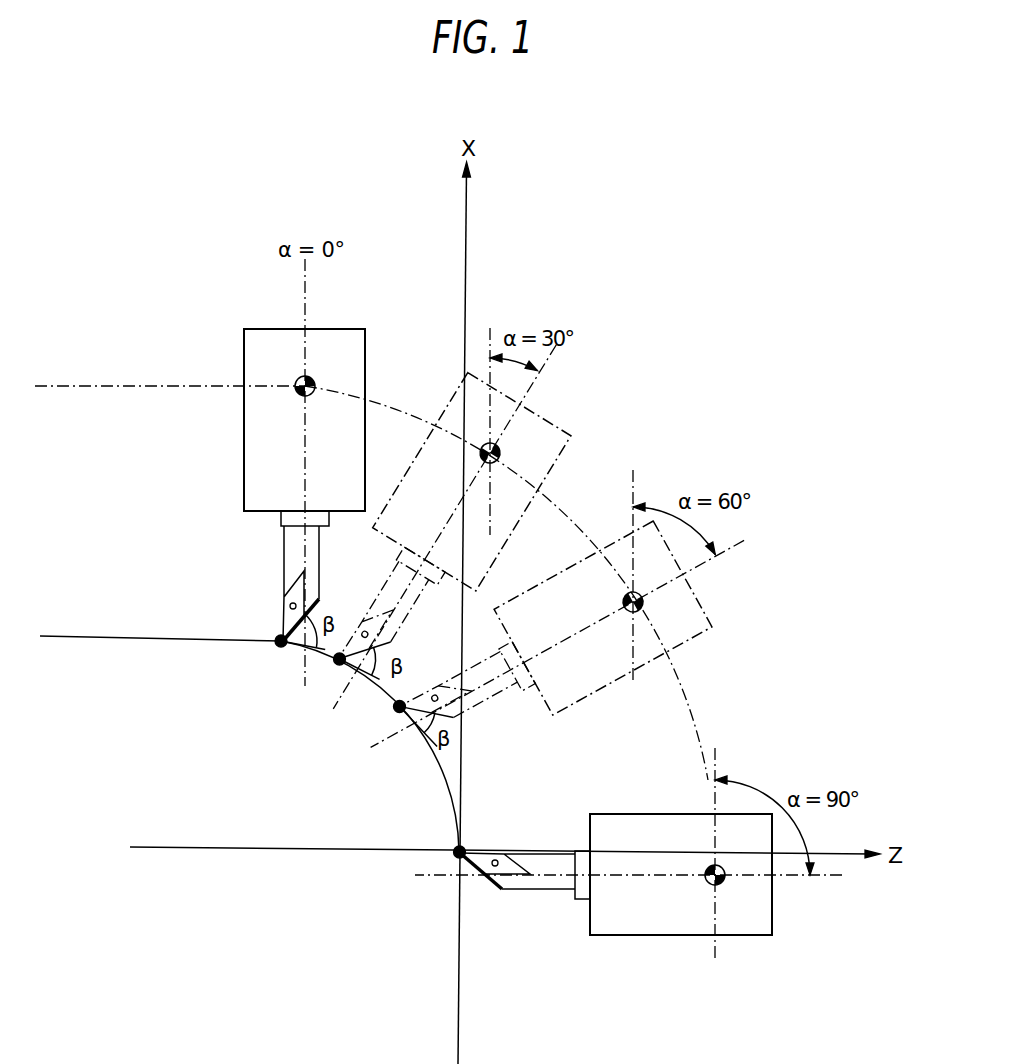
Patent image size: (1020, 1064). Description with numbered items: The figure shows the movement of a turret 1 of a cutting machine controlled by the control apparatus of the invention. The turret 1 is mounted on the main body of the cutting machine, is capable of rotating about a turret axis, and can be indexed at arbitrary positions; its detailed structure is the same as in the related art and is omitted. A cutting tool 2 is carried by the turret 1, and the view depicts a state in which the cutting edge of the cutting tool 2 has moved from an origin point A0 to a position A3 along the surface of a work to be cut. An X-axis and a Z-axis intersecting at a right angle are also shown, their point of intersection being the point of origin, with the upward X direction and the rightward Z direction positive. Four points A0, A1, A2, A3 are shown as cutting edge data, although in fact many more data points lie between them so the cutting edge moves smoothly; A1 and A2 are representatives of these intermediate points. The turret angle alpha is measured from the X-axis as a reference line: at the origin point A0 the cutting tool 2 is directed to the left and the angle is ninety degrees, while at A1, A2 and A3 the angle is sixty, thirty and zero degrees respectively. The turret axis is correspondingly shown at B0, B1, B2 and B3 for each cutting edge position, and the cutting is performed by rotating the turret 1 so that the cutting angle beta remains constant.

The turret 1 is at (690, 937).
The cutting tool 2 is at (547, 888).
The turret axis position at origin point B0 is at (628, 854).
The turret axis position at cutting edge position A1 B1 is at (557, 643).
The turret axis position at cutting edge position A2 B2 is at (444, 526).
The turret axis position at cutting edge position A3 B3 is at (200, 472).
The origin point of cutting edge A0 is at (445, 841).
The cutting edge position A1 is at (384, 716).
The cutting edge position A2 is at (332, 676).
The cutting edge position A3 is at (276, 655).